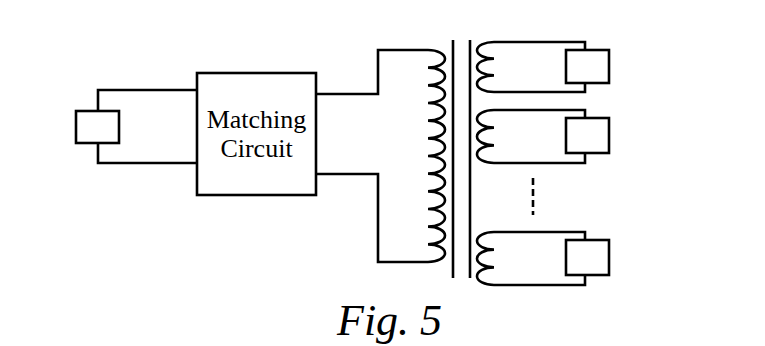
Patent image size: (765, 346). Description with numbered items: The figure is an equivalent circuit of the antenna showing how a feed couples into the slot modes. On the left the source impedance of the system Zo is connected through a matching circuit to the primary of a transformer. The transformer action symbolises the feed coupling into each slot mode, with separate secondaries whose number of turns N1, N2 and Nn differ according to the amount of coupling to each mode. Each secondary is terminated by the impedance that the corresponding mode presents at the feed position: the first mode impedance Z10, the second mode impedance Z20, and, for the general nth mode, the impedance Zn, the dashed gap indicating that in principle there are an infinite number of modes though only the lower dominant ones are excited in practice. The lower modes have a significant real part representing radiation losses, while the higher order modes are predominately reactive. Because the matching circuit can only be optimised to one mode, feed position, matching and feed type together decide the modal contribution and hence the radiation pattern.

The source impedance Zo is at (136, 126).
The number of turns N1 is at (531, 67).
The number of turns N2 is at (531, 136).
The number of turns Nn is at (531, 258).
The mode impedance Z10 is at (587, 68).
The mode impedance Z20 is at (587, 136).
The mode impedance Zn is at (587, 258).